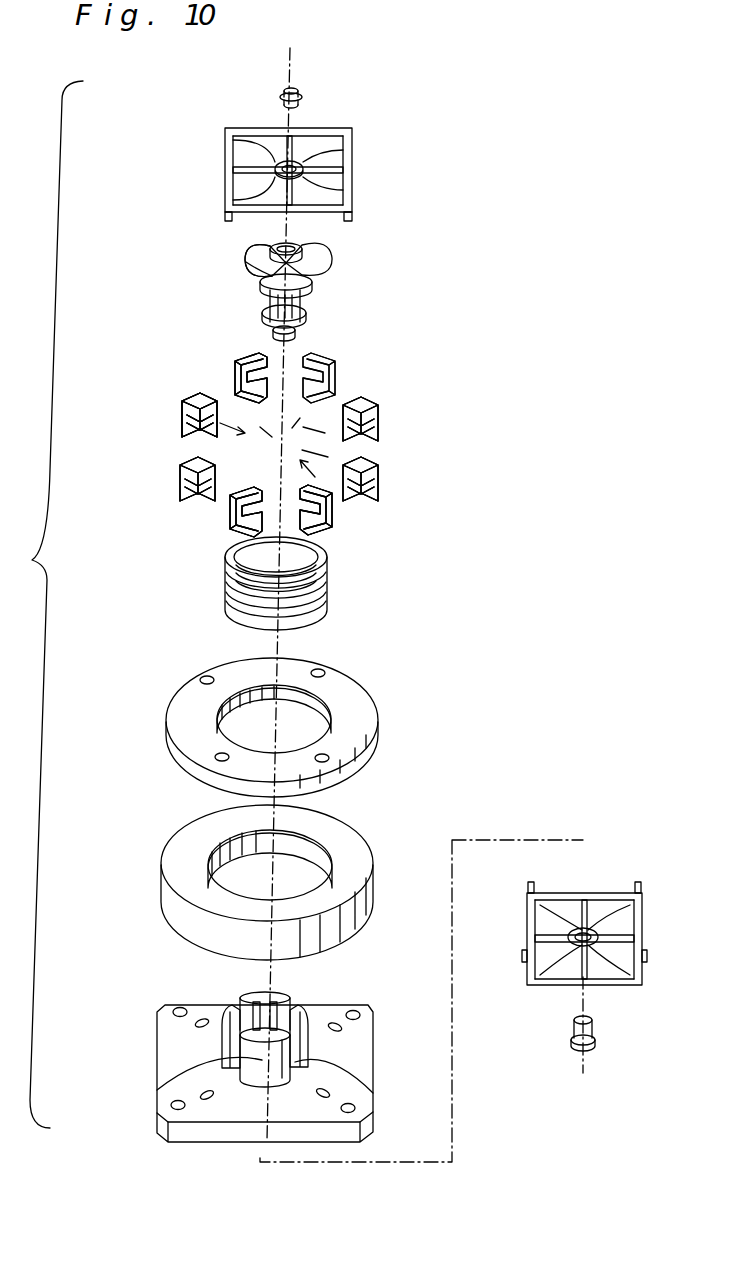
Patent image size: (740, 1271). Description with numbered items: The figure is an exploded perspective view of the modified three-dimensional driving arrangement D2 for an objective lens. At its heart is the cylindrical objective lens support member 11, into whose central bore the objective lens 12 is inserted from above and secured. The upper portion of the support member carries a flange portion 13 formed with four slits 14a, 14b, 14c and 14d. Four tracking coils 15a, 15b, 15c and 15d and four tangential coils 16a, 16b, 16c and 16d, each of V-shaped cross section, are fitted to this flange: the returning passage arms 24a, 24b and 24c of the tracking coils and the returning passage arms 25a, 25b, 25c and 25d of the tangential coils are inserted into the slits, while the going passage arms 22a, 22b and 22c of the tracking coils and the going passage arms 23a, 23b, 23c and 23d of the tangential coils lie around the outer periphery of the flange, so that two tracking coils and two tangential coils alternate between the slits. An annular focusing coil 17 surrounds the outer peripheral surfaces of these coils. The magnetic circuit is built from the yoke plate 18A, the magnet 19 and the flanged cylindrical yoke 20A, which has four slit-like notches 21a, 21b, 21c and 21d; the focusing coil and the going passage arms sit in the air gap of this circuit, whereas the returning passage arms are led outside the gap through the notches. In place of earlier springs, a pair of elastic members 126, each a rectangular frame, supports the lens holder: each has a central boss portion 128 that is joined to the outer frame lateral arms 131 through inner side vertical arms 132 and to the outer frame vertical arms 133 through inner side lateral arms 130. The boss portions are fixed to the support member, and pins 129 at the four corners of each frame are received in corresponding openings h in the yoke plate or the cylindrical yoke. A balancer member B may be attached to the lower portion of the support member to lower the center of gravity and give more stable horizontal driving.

The objective lens support member 11 is at (320, 268).
The objective lens 12 is at (302, 90).
The flange portion 13 is at (333, 270).
The slit 14a is at (260, 243).
The slit 14b is at (260, 283).
The slit 14c is at (325, 283).
The slit 14d is at (307, 245).
The tracking coil 15a is at (185, 400).
The tracking coil 15b is at (182, 497).
The tracking coil 15c is at (377, 500).
The tracking coil 15d is at (385, 410).
The tangential coil 16a is at (333, 362).
The tangential coil 16b is at (237, 358).
The tangential coil 16c is at (230, 527).
The tangential coil 16d is at (333, 528).
The focusing coil 17 is at (327, 600).
The yoke plate 18A is at (365, 700).
The magnet 19 is at (353, 848).
The cylindrical yoke 20A is at (172, 1030).
The notch 21a is at (237, 1005).
The notch 21b is at (232, 1060).
The notch 21c is at (300, 1065).
The notch 21d is at (298, 1003).
The going passage arm 22a is at (180, 418).
The going passage arm 22b is at (182, 460).
The going passage arm 22c is at (377, 475).
The going passage arm 23a is at (305, 353).
The going passage arm 23b is at (267, 353).
The going passage arm 23c is at (267, 537).
The going passage arm 23d is at (300, 532).
The returning passage arm 24a is at (220, 413).
The returning passage arm 24b is at (210, 457).
The returning passage arm 24c is at (353, 457).
The returning passage arm 25a is at (275, 378).
The returning passage arm 25b is at (234, 415).
The returning passage arm 25c is at (243, 482).
The returning passage arm 25d is at (318, 482).
The elastic member 126 is at (307, 128).
The central boss portion 128 is at (303, 165).
The pin 129 is at (227, 130).
The inner side lateral arm 130 is at (349, 183).
The outer frame lateral arm 131 is at (270, 130).
The inner side vertical arm 132 is at (230, 128).
The outer frame vertical arm 133 is at (349, 163).
The opening h is at (207, 678).
The balancer member B is at (593, 1027).
The driving arrangement D2 is at (495, 138).